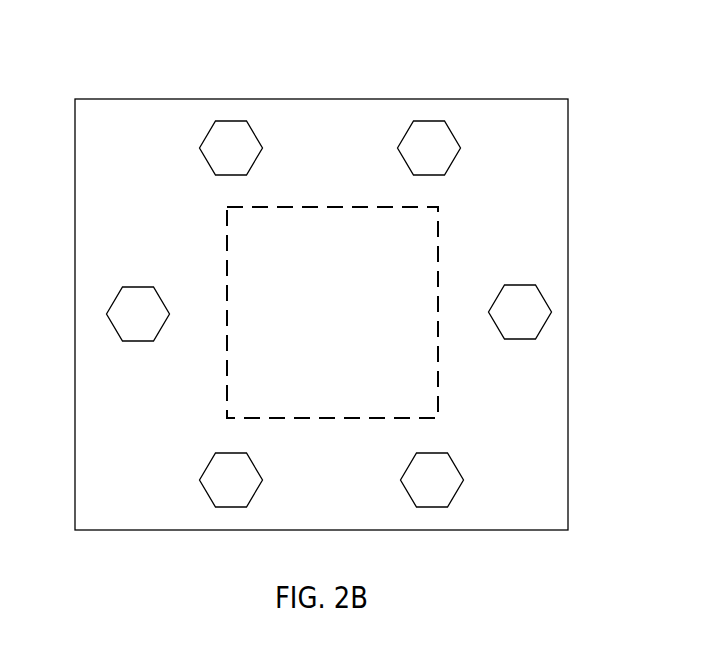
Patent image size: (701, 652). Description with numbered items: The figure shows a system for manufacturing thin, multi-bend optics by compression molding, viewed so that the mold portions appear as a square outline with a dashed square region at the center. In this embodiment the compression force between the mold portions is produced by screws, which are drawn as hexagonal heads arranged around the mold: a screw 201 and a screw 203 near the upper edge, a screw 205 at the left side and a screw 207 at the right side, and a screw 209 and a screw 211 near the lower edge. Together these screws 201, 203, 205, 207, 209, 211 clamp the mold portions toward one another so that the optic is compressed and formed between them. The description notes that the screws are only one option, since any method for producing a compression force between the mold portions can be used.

The screw 201 is at (208, 128).
The screw 203 is at (404, 136).
The screw 205 is at (116, 302).
The screw 207 is at (542, 292).
The screw 209 is at (432, 507).
The hexagonal fastening region 211 is at (228, 507).